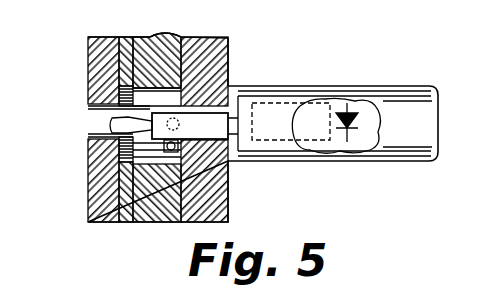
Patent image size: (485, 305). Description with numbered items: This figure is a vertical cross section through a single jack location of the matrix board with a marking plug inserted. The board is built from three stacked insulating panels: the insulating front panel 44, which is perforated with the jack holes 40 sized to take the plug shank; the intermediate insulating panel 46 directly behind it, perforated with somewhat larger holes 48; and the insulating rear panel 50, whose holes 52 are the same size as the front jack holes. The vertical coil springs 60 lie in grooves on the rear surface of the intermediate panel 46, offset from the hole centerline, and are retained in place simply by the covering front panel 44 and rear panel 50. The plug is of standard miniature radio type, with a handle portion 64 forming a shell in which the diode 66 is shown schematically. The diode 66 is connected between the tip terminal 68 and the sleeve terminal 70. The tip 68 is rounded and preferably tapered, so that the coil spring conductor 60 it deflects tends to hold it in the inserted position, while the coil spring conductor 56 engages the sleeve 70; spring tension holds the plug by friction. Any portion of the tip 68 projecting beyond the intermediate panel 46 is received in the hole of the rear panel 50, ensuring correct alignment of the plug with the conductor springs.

The jack holes 40 is at (228, 65).
The insulating front panel 44 is at (218, 53).
The intermediate insulating panel 46 is at (140, 34).
The holes 48 is at (88, 189).
The insulating rear panel 50 is at (88, 64).
The holes 52 is at (90, 112).
The coil spring conductor 56 is at (178, 186).
The vertical coil springs 60 is at (134, 101).
The handle portion 64 is at (408, 97).
The diode 66 is at (362, 121).
The tip terminal 68 is at (110, 126).
The sleeve terminal 70 is at (213, 144).